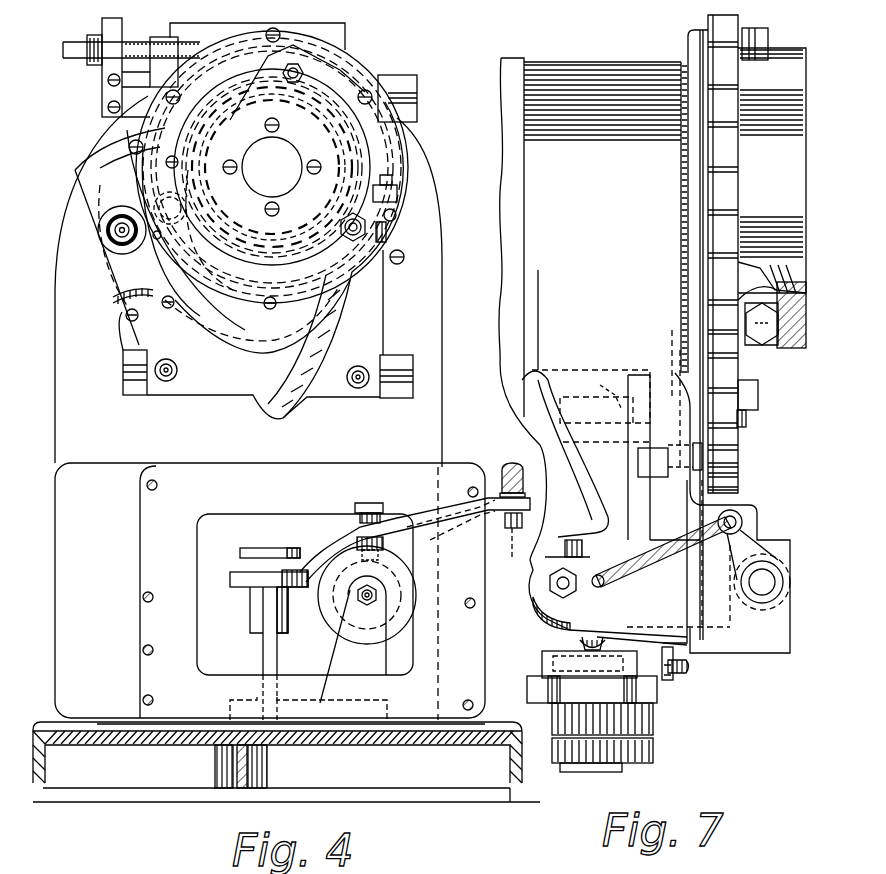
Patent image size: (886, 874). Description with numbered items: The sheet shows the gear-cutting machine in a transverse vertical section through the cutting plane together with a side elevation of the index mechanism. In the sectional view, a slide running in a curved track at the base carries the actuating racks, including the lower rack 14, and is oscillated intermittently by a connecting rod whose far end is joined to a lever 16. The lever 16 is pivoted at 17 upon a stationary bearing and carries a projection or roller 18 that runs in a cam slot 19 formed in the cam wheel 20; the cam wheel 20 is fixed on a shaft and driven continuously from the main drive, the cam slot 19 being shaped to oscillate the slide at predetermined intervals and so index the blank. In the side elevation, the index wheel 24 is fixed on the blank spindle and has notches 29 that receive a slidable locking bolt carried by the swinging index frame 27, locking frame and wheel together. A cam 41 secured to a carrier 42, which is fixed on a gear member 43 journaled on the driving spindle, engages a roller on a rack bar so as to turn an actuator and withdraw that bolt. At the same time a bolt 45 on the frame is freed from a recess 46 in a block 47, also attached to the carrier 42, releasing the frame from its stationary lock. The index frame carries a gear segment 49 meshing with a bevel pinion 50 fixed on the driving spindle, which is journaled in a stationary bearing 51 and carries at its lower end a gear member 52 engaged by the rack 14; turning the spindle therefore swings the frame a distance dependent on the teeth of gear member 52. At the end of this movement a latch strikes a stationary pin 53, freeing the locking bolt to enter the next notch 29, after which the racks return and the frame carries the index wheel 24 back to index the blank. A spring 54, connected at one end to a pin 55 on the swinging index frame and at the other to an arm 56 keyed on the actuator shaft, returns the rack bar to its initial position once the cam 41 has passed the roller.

In FIG. 4, the rack 14 is at (408, 140).
In FIG. 4, the lever 16 is at (507, 532).
In FIG. 4, the pivot 17 is at (273, 560).
In FIG. 4, the roller 18 is at (415, 535).
In FIG. 4, the cam slot 19 is at (398, 622).
In FIG. 4, the cam wheel 20 is at (342, 604).
In FIG. 7, the index wheel 24 is at (757, 254).
In FIG. 7, the swinging index frame 27 is at (678, 471).
In FIG. 7, the notches 29 is at (723, 453).
In FIG. 7, the cam 41 is at (685, 668).
In FIG. 7, the carrier 42 is at (668, 700).
In FIG. 7, the gear member 43 is at (640, 720).
In FIG. 7, the bolt 45 is at (610, 643).
In FIG. 7, the recess 46 is at (575, 663).
In FIG. 7, the block 47 is at (615, 663).
In FIG. 7, the gear segment 49 is at (615, 395).
In FIG. 7, the bevel pinion 50 is at (605, 410).
In FIG. 7, the stationary bearing 51 is at (565, 413).
In FIG. 7, the gear member 52 is at (625, 752).
In FIG. 7, the stationary pin 53 is at (762, 590).
In FIG. 7, the spring 54 is at (680, 560).
In FIG. 7, the pin 55 is at (615, 608).
In FIG. 7, the arm 56 is at (742, 522).